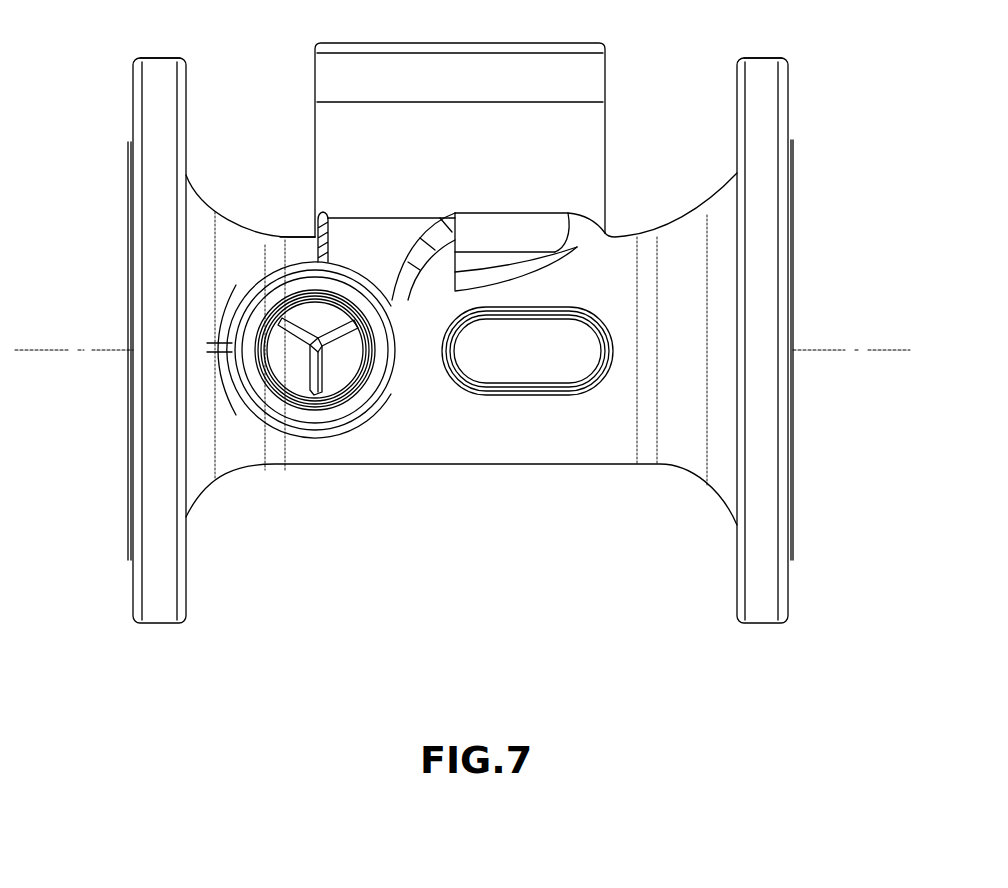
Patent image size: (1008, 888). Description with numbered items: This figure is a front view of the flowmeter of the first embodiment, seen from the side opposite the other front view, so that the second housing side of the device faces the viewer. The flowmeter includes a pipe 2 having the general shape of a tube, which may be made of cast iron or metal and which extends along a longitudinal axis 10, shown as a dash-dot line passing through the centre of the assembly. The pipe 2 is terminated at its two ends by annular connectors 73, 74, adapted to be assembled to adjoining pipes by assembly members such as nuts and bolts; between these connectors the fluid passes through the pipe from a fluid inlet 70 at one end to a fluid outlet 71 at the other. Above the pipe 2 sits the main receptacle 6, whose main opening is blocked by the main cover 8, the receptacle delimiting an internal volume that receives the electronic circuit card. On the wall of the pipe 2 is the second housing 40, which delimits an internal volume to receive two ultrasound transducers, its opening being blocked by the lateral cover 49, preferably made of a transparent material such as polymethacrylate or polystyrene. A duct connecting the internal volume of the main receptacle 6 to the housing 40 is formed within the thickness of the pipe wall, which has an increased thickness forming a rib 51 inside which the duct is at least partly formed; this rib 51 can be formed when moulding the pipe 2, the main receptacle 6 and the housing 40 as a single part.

The pipe 2 is at (590, 490).
The main receptacle 6 is at (608, 148).
The main cover 8 is at (608, 74).
The longitudinal axis 10 is at (853, 348).
The second housing 40 is at (241, 367).
The lateral cover 49 is at (340, 374).
The rib 51 is at (422, 276).
The fluid inlet 70 is at (113, 281).
The fluid outlet 71 is at (811, 401).
The annular connector 73 is at (152, 102).
The annular connector 74 is at (770, 102).